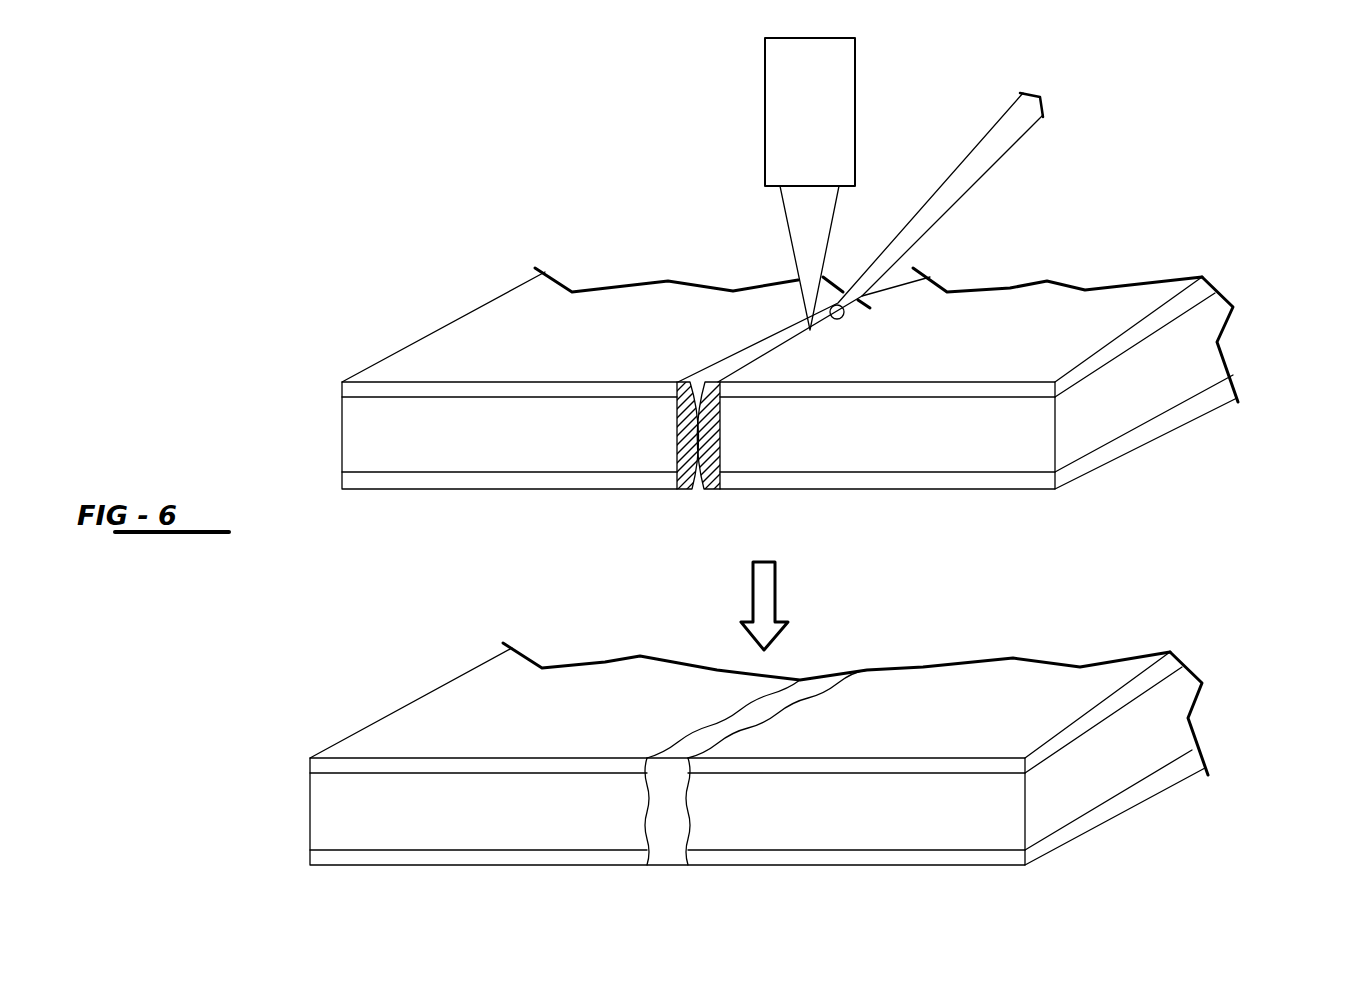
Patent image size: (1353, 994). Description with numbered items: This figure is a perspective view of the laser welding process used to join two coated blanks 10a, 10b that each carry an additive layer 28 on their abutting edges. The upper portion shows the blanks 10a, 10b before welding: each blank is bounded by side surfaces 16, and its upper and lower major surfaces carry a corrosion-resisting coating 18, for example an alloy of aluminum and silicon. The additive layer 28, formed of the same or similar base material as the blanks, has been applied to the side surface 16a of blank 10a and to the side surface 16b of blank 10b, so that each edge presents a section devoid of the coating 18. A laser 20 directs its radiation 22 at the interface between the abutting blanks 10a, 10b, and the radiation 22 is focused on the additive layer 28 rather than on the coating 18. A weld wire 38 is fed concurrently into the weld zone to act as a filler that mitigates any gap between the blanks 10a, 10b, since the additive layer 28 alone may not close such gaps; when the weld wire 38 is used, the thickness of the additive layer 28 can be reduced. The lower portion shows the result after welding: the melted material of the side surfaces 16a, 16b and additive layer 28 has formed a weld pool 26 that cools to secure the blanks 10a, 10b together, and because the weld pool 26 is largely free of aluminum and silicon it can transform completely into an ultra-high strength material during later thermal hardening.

The blank 10a is at (393, 305).
The blank 10b is at (1258, 312).
The side surface 16 is at (473, 454).
The side surface 16a is at (677, 430).
The side surface 16b is at (720, 432).
The coating 18 is at (568, 398).
The laser 20 is at (798, 124).
The radiation 22 is at (790, 242).
The weld pool 26 is at (668, 845).
The additive layer 28 is at (683, 465).
The weld wire 38 is at (978, 150).